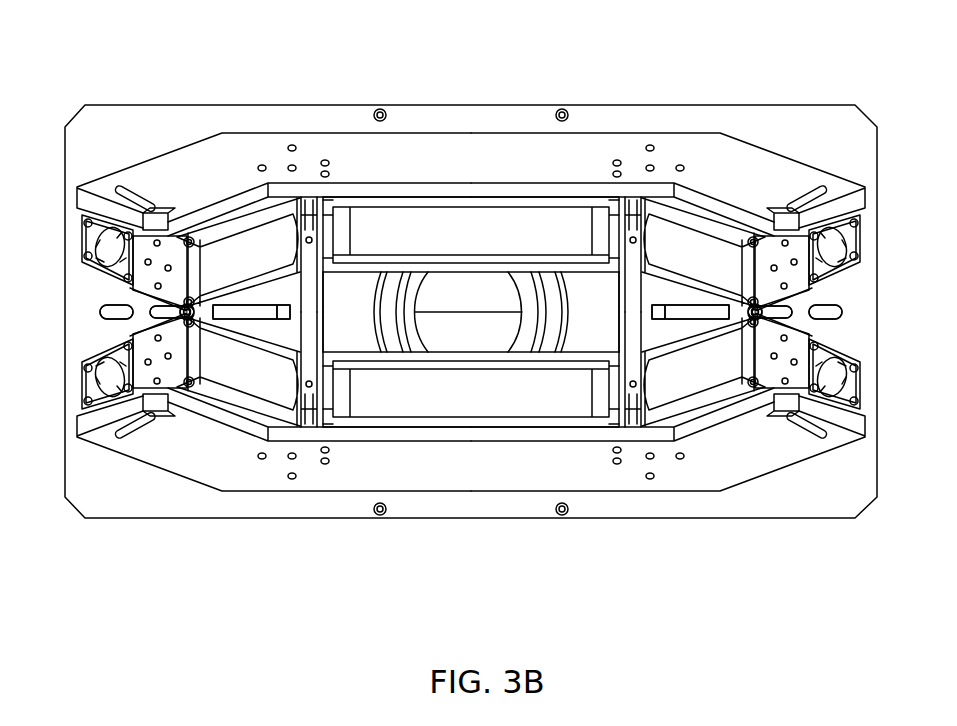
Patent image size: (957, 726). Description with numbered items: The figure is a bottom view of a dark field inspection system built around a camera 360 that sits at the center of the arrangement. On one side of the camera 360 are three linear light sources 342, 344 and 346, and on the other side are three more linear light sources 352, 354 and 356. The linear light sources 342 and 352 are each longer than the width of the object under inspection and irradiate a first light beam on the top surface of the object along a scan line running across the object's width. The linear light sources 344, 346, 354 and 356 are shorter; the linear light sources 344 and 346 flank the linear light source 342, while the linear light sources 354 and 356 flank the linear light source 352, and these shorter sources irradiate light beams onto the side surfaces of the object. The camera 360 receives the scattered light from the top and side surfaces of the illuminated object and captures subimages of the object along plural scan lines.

The linear light source 342 is at (538, 227).
The linear light source 344 is at (247, 242).
The linear light source 346 is at (713, 248).
The linear light source 352 is at (483, 390).
The linear light source 354 is at (255, 372).
The linear light source 356 is at (705, 370).
The camera 360 is at (460, 297).